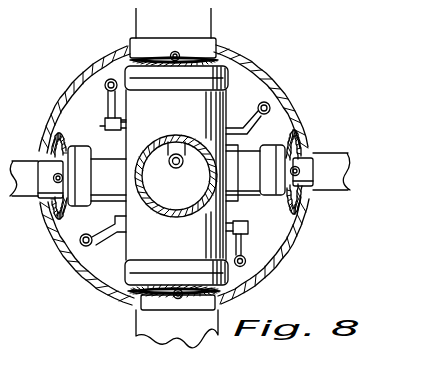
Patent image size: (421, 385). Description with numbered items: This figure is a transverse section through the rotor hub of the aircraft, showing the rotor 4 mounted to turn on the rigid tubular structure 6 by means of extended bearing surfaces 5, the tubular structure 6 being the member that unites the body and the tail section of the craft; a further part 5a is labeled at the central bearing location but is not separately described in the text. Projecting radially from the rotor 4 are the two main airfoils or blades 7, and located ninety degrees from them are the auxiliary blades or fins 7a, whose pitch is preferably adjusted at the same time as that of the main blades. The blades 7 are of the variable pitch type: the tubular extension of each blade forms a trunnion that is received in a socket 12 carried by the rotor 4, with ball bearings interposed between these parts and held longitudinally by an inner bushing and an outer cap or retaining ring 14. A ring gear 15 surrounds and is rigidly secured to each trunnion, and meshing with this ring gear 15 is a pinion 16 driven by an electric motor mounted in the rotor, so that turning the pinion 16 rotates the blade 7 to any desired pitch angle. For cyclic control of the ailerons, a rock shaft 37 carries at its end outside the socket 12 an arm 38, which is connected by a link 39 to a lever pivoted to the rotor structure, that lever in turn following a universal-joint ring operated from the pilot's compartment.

The rotor 4 is at (296, 120).
The extended bearing surfaces 5 is at (173, 128).
The bolt 5a is at (169, 160).
The rigid tubular structure 6 is at (176, 176).
The main airfoils or blades 7 is at (190, 5).
The auxiliary blades or fins 7a is at (321, 152).
The socket 12 is at (217, 93).
The outer cap or retaining ring 14 is at (222, 67).
The ring gear 15 is at (229, 44).
The pinion 16 is at (167, 44).
The rock shaft 37 is at (106, 122).
The arm 38 is at (108, 98).
The link 39 is at (108, 50).